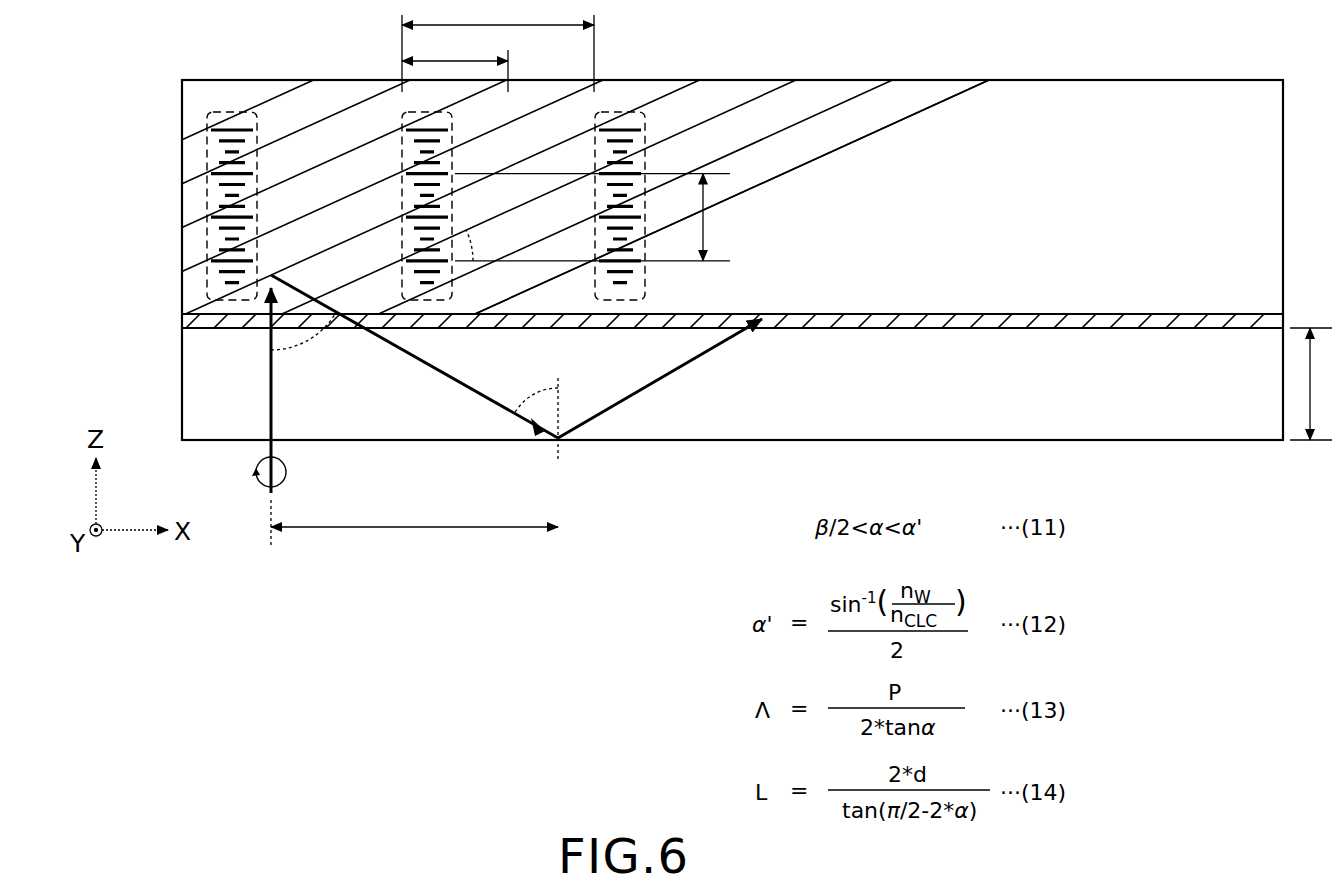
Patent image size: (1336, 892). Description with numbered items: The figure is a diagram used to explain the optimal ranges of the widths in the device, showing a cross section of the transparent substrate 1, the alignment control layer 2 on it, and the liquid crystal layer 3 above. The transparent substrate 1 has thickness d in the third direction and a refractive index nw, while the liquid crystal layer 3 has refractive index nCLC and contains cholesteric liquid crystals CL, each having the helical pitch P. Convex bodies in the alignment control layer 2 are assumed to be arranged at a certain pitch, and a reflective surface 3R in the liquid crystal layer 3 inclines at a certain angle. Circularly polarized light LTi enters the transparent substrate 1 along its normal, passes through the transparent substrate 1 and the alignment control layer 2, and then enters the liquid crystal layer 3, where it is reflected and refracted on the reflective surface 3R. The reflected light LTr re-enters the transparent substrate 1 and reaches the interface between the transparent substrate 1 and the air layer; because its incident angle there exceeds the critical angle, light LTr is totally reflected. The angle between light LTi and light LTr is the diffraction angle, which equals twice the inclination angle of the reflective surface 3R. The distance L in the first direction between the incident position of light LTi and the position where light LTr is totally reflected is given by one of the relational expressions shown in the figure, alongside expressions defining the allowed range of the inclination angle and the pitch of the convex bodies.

The transparent substrate 1 is at (1216, 442).
The alignment control layer 2 is at (1219, 322).
The liquid crystal layer 3 is at (326, 90).
The reflective surface 3R is at (745, 108).
The cholesteric liquid crystal CL is at (233, 112).
The light LTi is at (265, 392).
The light LTr is at (447, 378).
The helical pitch P is at (592, 217).
The distance L is at (414, 531).
The thickness d is at (1312, 384).